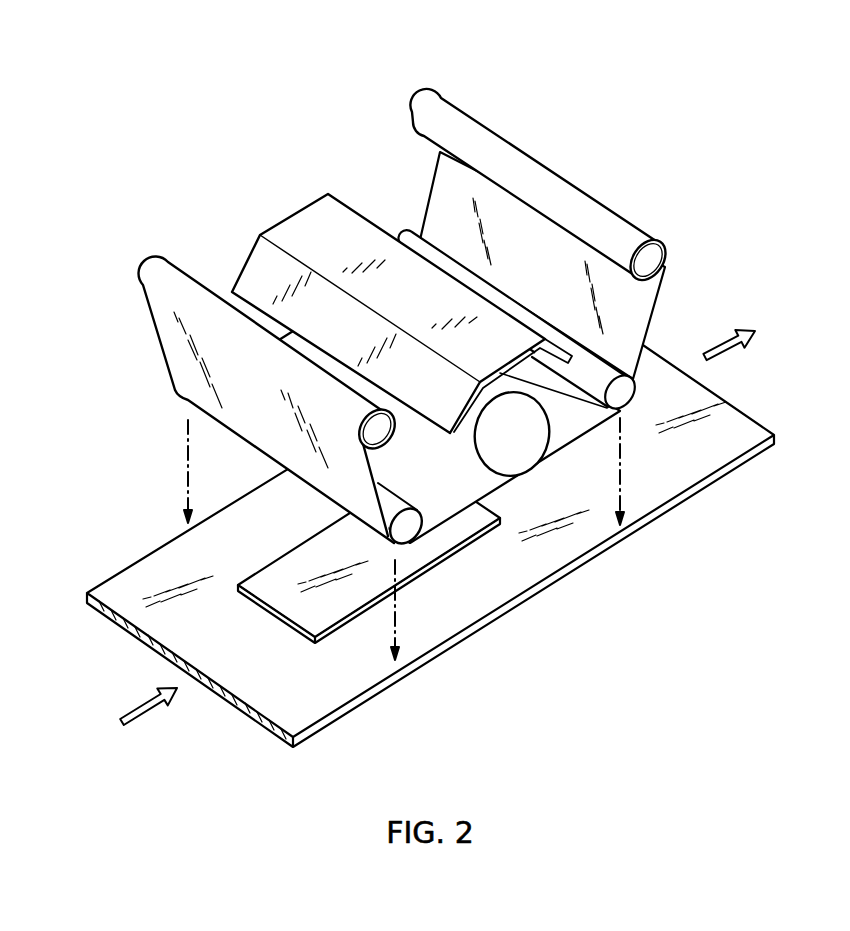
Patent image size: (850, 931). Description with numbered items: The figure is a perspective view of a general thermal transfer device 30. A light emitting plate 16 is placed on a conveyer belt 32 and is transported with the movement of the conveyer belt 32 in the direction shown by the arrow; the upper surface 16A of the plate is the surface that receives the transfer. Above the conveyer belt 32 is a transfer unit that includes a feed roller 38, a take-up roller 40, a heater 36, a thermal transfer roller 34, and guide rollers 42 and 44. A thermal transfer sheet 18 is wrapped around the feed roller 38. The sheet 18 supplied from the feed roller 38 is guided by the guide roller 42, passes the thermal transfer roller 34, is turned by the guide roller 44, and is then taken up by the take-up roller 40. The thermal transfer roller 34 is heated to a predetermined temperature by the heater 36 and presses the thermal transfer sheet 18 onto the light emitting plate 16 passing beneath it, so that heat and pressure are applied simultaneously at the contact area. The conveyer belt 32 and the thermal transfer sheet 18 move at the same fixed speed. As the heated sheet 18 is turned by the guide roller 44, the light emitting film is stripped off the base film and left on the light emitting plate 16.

The light emitting plate 16 is at (343, 621).
The top surface of guide plate 16A is at (397, 606).
The thermal transfer sheet 18 is at (657, 307).
The thermal transfer device 30 is at (660, 160).
The conveyer belt 32 is at (657, 477).
The thermal transfer roller 34 is at (552, 437).
The heater 36 is at (288, 213).
The feed roller 38 is at (140, 290).
The take-up roller 40 is at (403, 99).
The guide roller 42 is at (426, 525).
The guide roller 44 is at (627, 392).